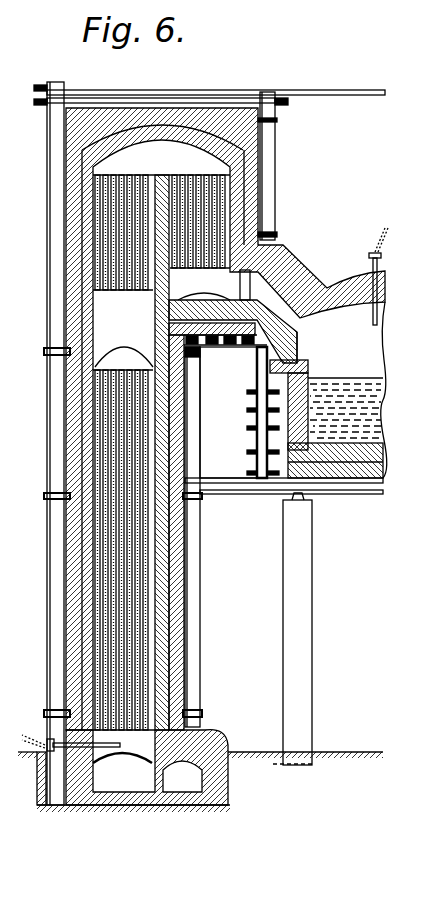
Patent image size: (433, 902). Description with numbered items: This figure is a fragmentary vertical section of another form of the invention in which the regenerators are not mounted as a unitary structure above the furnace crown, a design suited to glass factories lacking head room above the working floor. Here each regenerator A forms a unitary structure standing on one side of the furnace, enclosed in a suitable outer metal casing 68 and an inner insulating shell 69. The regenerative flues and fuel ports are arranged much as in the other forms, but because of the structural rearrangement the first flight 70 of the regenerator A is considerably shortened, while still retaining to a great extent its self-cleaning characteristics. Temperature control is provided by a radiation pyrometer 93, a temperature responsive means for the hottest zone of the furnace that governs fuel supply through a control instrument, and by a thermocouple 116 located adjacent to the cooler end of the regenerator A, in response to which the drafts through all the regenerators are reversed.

The outer metal casing 68 is at (207, 110).
The first flight 70 is at (213, 192).
The regenerator A is at (213, 220).
The radiation pyrometer 93 is at (378, 323).
The inner insulating shell 69 is at (185, 593).
The thermocouple 116 is at (55, 752).